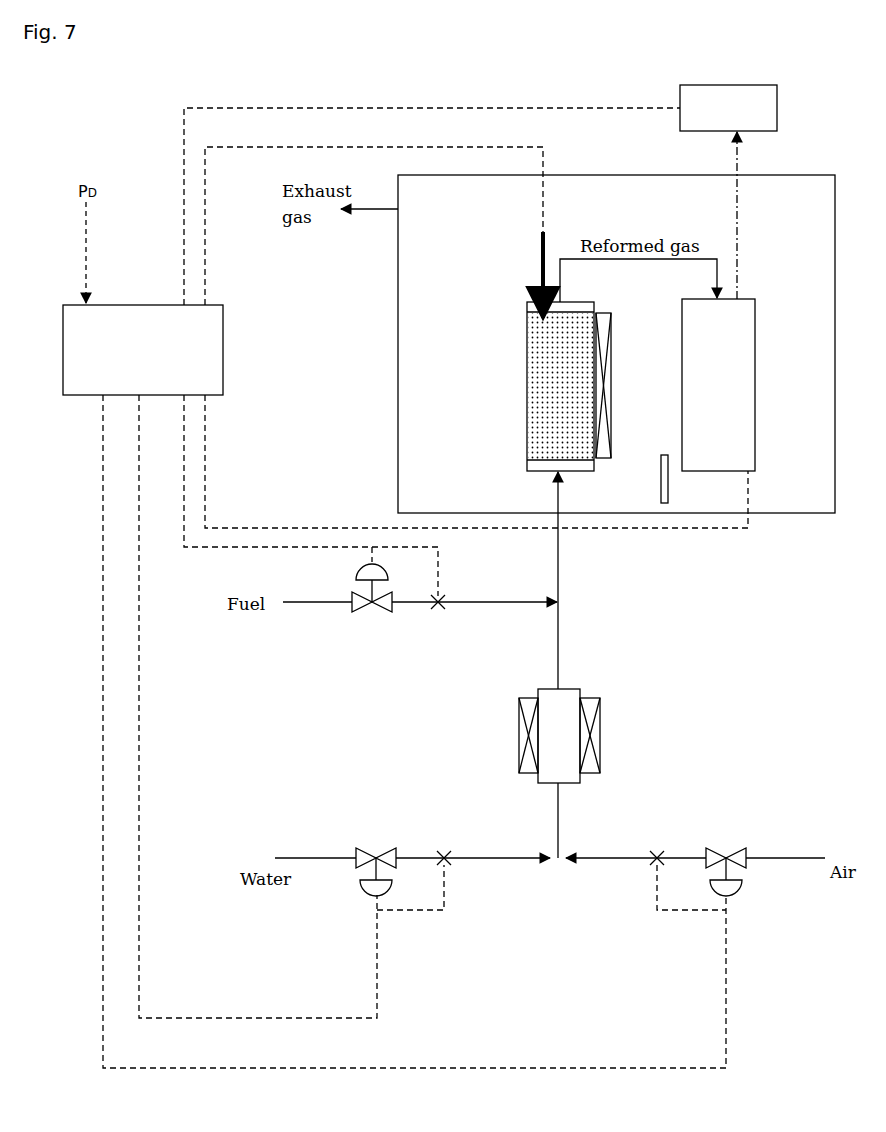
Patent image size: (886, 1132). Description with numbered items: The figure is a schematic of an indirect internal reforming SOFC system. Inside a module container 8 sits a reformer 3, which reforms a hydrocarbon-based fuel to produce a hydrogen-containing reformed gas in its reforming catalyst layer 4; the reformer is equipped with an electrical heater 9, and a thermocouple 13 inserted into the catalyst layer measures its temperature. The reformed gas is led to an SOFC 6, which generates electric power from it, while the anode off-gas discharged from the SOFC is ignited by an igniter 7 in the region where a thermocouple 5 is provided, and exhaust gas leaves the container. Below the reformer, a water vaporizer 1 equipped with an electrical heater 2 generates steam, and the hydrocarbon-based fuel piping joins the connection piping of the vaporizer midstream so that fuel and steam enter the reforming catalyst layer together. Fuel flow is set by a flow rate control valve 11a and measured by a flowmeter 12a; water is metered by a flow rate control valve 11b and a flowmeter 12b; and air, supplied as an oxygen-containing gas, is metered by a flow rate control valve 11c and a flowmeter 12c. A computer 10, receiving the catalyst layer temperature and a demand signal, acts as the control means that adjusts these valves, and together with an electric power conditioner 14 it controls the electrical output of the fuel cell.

The water vaporizer 1 is at (582, 688).
The electrical heater annexed to water vaporizer 2 is at (602, 740).
The reformer 3 is at (525, 305).
The reforming catalyst layer 4 is at (550, 405).
The thermocouple 5 is at (668, 395).
The SOFC 6 is at (768, 300).
The igniter 7 is at (672, 498).
The module container 8 is at (805, 515).
The electrical heater annexed to reformer 9 is at (616, 319).
The computer 10 is at (146, 298).
The flow rate control valve for hydrocarbon-based fuel 11a is at (368, 612).
The flow rate control valve for water 11b is at (378, 849).
The flow rate control valve for air 11c is at (727, 850).
The flowmeter for hydrocarbon-based fuel 12a is at (438, 612).
The flowmeter for water 12b is at (446, 849).
The flowmeter for air 12c is at (657, 850).
The thermocouple 13 is at (540, 232).
The electric power conditioner 14 is at (783, 98).